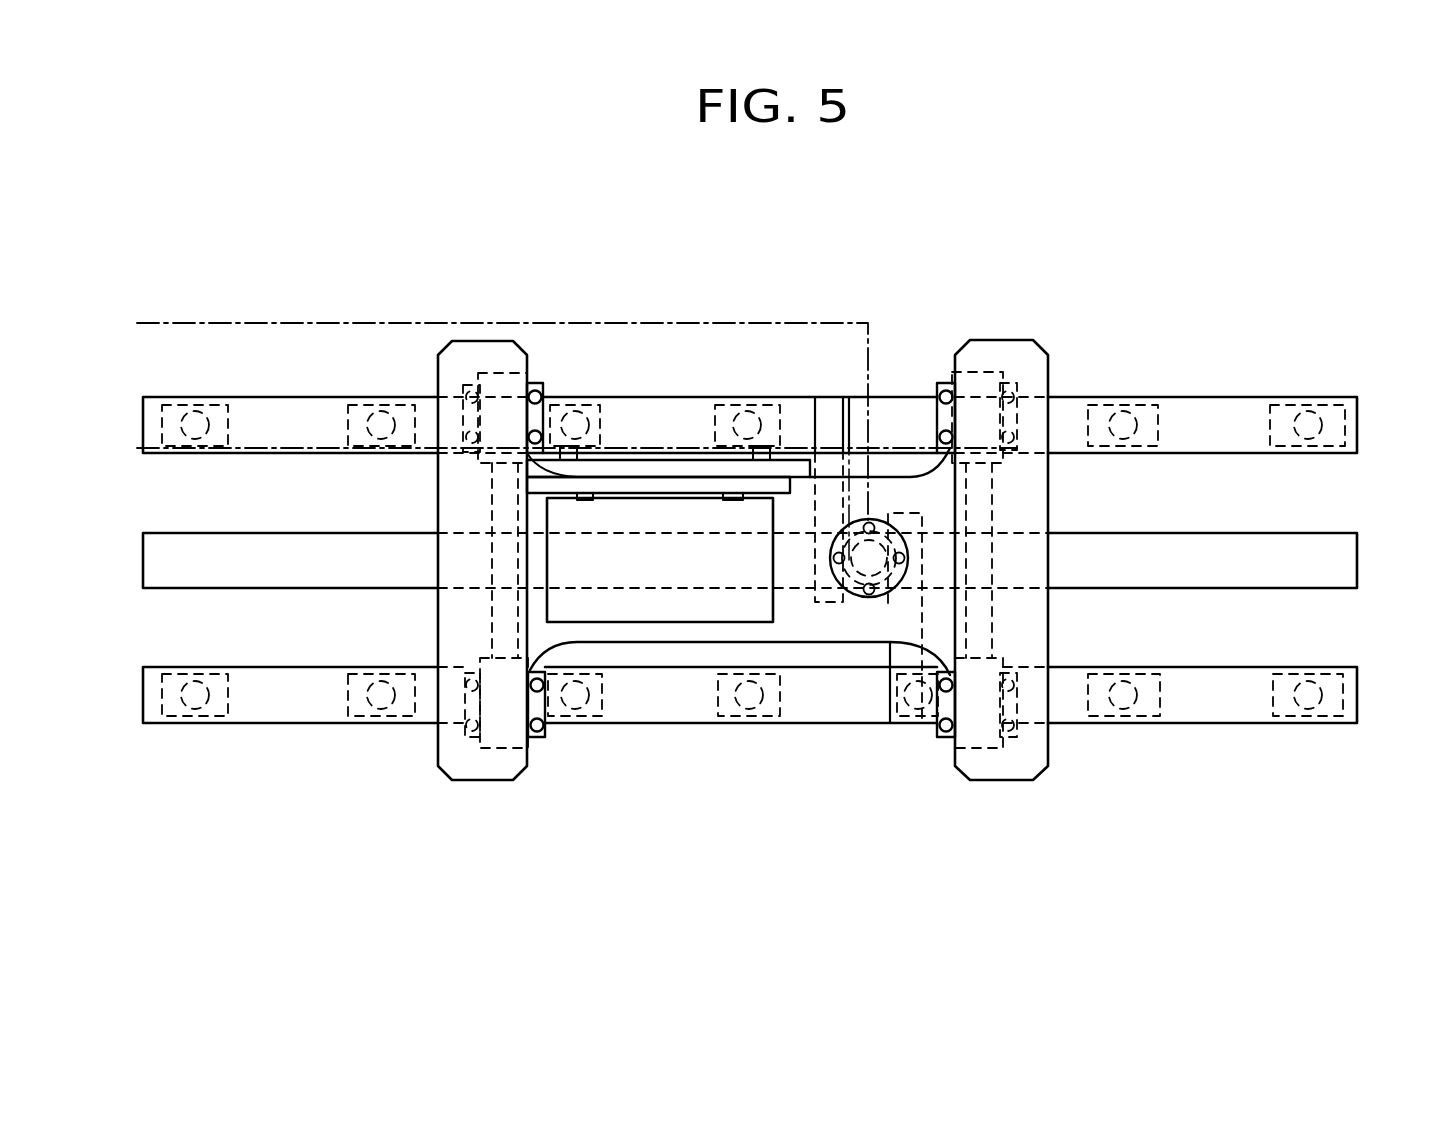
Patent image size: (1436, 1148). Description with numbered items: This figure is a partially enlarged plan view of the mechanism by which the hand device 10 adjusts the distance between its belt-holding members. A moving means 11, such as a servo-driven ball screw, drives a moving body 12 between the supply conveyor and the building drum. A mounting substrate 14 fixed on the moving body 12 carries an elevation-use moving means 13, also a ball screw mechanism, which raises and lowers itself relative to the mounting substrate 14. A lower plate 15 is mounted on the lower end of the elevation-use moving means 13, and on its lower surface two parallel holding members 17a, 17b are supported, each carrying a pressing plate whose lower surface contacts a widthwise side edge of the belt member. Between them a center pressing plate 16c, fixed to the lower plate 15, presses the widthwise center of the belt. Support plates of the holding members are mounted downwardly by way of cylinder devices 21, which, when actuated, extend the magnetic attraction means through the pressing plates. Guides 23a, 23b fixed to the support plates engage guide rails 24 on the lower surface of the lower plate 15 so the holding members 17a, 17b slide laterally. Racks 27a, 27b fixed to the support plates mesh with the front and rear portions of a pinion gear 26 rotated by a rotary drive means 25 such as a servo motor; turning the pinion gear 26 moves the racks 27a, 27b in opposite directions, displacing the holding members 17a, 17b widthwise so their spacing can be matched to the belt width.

The hand device 10 is at (1118, 302).
The moving means 11 is at (235, 340).
The moving body 12 is at (637, 470).
The elevation-use moving means 13 is at (683, 607).
The mounting substrate 14 is at (683, 480).
The lower plate 15 is at (1022, 353).
The pressing plate 16c is at (1307, 575).
The holding member 17a is at (1197, 402).
The holding member 17b is at (1175, 715).
The cylinder device 21 is at (192, 415).
The guide 23a is at (503, 408).
The guide 23b is at (492, 697).
The guide rail 24 is at (493, 513).
The rotary drive means 25 is at (868, 592).
The pinion gear 26 is at (868, 520).
The rack 27a is at (820, 468).
The rack 27b is at (905, 645).